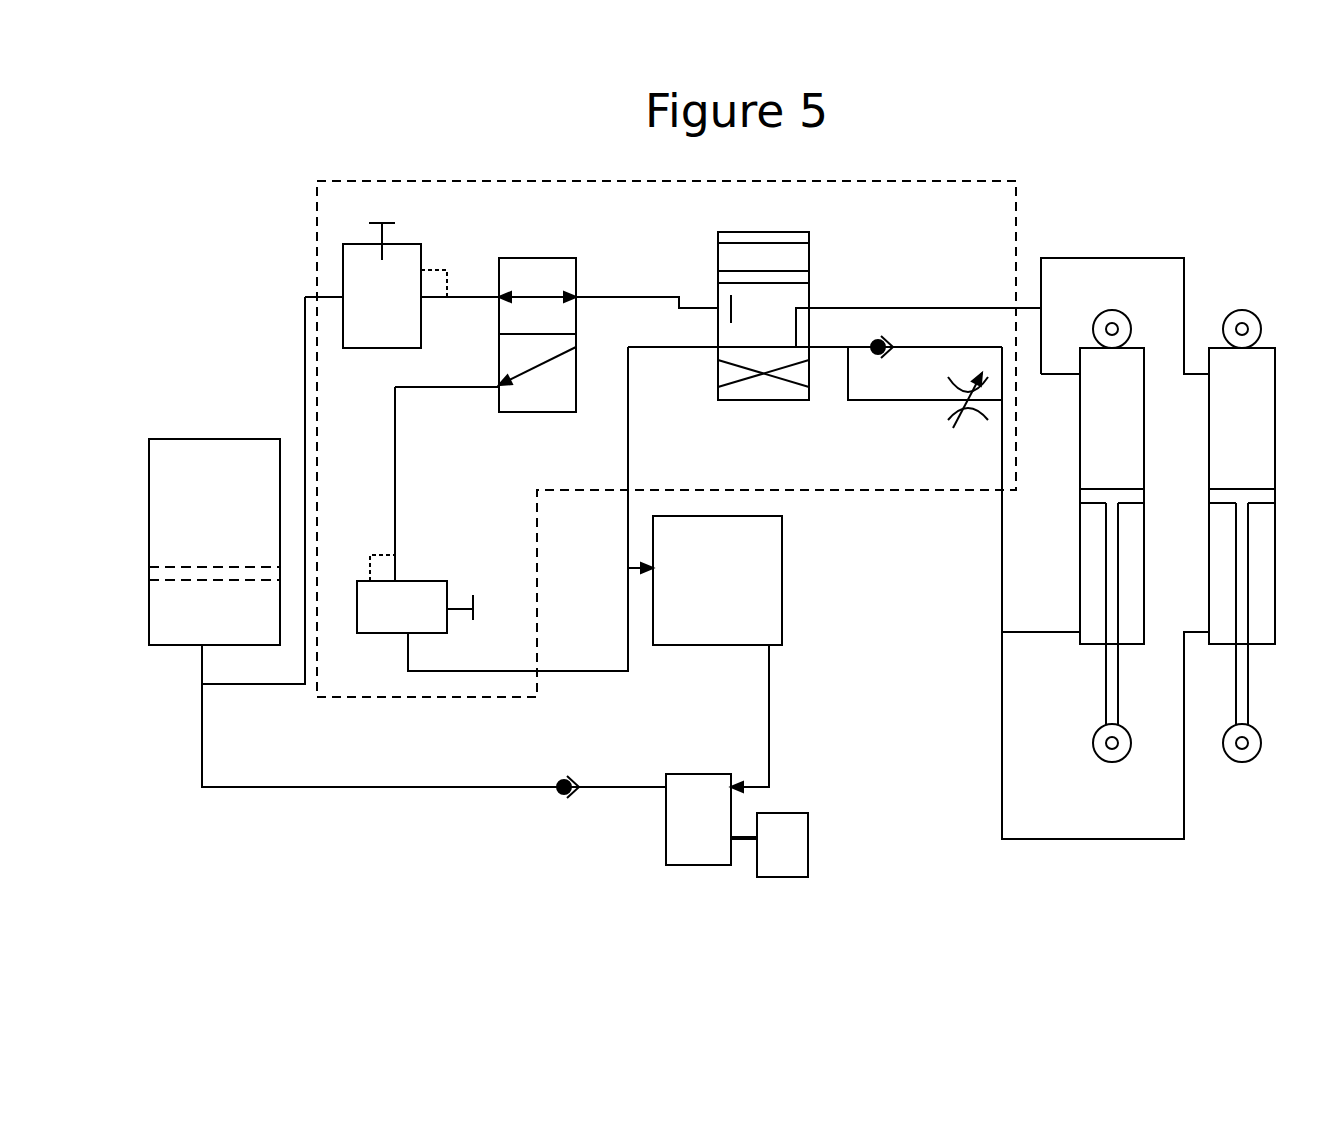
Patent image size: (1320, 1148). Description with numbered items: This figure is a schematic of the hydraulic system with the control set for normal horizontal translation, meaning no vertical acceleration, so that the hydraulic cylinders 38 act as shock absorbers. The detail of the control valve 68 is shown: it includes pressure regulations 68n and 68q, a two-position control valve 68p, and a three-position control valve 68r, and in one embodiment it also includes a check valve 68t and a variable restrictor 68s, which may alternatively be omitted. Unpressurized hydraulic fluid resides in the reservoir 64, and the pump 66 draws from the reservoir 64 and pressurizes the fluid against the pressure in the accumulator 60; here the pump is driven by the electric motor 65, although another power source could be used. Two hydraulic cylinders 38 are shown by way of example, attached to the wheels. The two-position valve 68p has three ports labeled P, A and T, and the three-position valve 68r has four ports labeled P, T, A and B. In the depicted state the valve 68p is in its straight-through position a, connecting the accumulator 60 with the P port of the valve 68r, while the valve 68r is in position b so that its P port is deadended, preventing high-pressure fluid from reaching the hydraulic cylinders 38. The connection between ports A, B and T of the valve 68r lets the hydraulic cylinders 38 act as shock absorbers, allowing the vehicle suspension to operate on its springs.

The control valve 68 is at (1020, 212).
The pressure regulation 68n is at (415, 310).
The two-position control valve 68p is at (522, 316).
The pressure regulation 68q is at (423, 630).
The three-position control valve 68r is at (762, 295).
The variable restrictor 68s is at (925, 401).
The check valve 68t is at (883, 337).
The hydraulic cylinder 38 is at (1134, 425).
The accumulator 60 is at (232, 629).
The reservoir 64 is at (735, 619).
The electric motor 65 is at (802, 862).
The pump 66 is at (724, 824).